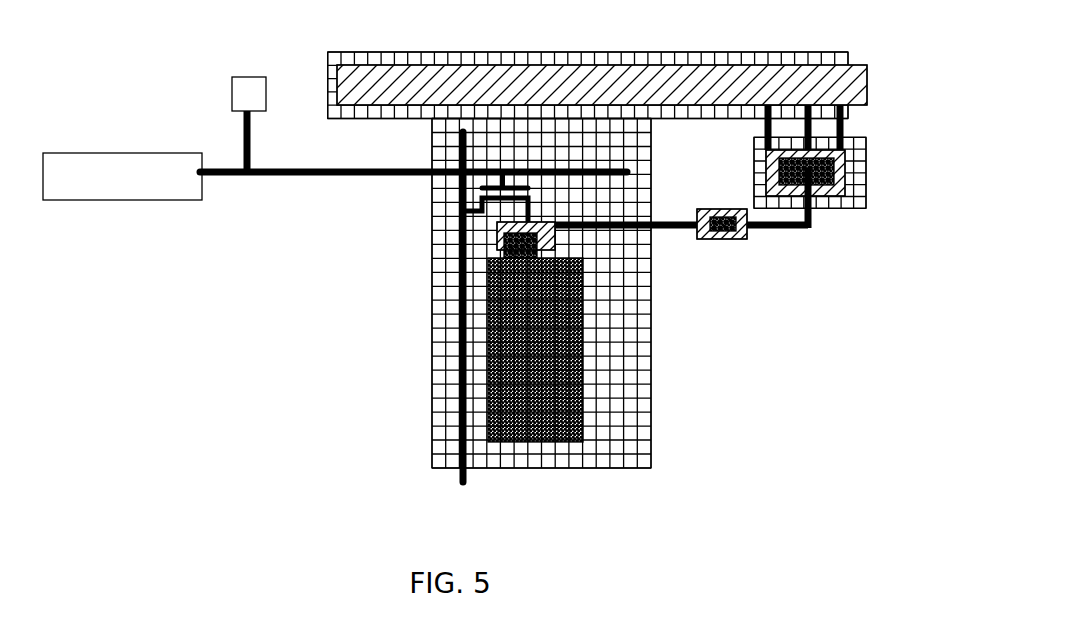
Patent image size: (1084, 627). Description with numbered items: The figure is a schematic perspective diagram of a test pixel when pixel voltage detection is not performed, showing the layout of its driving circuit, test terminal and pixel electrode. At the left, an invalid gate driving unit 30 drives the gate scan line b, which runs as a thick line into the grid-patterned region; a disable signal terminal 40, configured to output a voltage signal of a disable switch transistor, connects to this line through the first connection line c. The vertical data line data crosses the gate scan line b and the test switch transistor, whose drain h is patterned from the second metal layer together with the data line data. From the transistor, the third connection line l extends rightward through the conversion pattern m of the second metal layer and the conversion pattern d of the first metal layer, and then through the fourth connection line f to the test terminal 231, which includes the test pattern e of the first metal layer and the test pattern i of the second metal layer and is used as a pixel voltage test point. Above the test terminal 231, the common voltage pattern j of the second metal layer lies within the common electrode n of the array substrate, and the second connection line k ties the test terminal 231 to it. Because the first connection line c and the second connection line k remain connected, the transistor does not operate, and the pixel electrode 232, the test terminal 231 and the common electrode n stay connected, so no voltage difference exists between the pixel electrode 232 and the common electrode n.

The invalid gate driving unit 30 is at (122, 176).
The disable signal terminal 40 is at (249, 94).
The test terminal 231 is at (867, 141).
The pixel electrode 232 is at (540, 443).
The common electrode n is at (615, 52).
The common voltage pattern of the second metal layer j is at (866, 80).
The second connection line k is at (843, 128).
The test pattern of the second metal layer i is at (842, 192).
The test pattern of the first metal layer e is at (823, 183).
The fourth connection line f is at (783, 227).
The third connection line l is at (655, 222).
The conversion pattern of the second metal layer m is at (742, 210).
The conversion pattern of the first metal layer d is at (722, 228).
The drain h is at (500, 228).
The gate scan line b is at (352, 178).
The first connection line c is at (243, 165).
The data line data is at (462, 325).